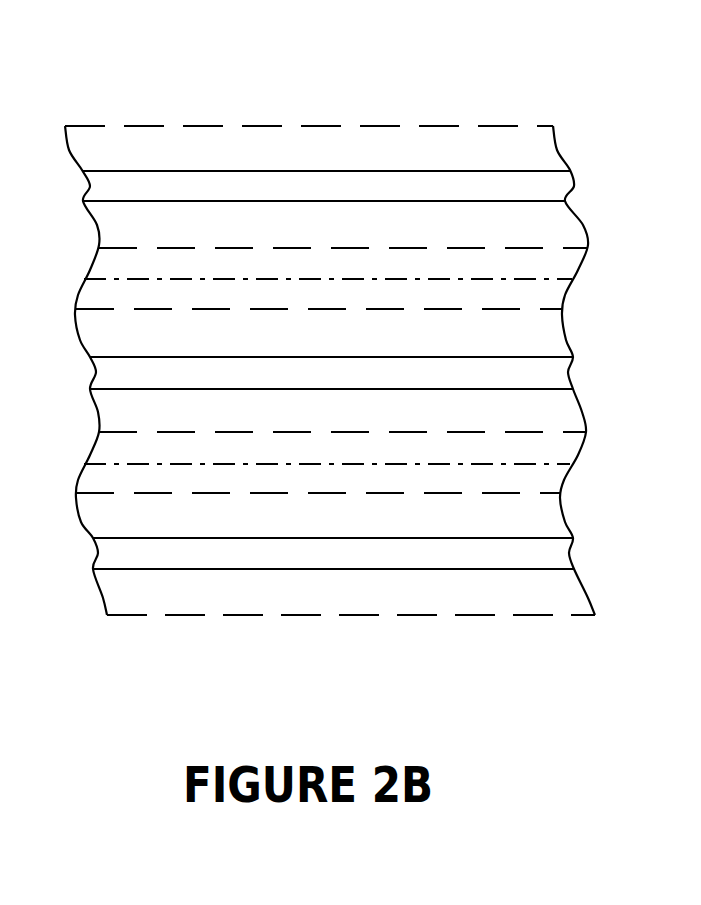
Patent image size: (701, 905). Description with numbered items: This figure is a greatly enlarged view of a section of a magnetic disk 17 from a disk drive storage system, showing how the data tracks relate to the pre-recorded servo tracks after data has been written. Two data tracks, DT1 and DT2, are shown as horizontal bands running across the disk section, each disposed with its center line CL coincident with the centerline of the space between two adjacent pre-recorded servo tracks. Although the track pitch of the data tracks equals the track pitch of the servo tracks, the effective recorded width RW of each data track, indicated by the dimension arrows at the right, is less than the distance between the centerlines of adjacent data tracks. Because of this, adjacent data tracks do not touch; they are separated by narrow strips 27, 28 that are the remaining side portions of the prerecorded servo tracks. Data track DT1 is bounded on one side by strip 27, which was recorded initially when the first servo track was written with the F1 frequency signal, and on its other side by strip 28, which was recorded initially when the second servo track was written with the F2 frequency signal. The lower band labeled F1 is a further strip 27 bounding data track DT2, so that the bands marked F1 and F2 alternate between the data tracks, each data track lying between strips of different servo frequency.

The magnetic tape 17 is at (348, 329).
The strip of prerecorded servo track 27 is at (92, 193).
The strip of prerecorded servo track 28 is at (97, 377).
The center line CL is at (99, 281).
The F1 frequency signal F1 is at (140, 372).
The F2 frequency signal F2 is at (140, 375).
The data track DT1 is at (567, 228).
The data track DT2 is at (553, 522).
The effective recorded width RW is at (608, 202).